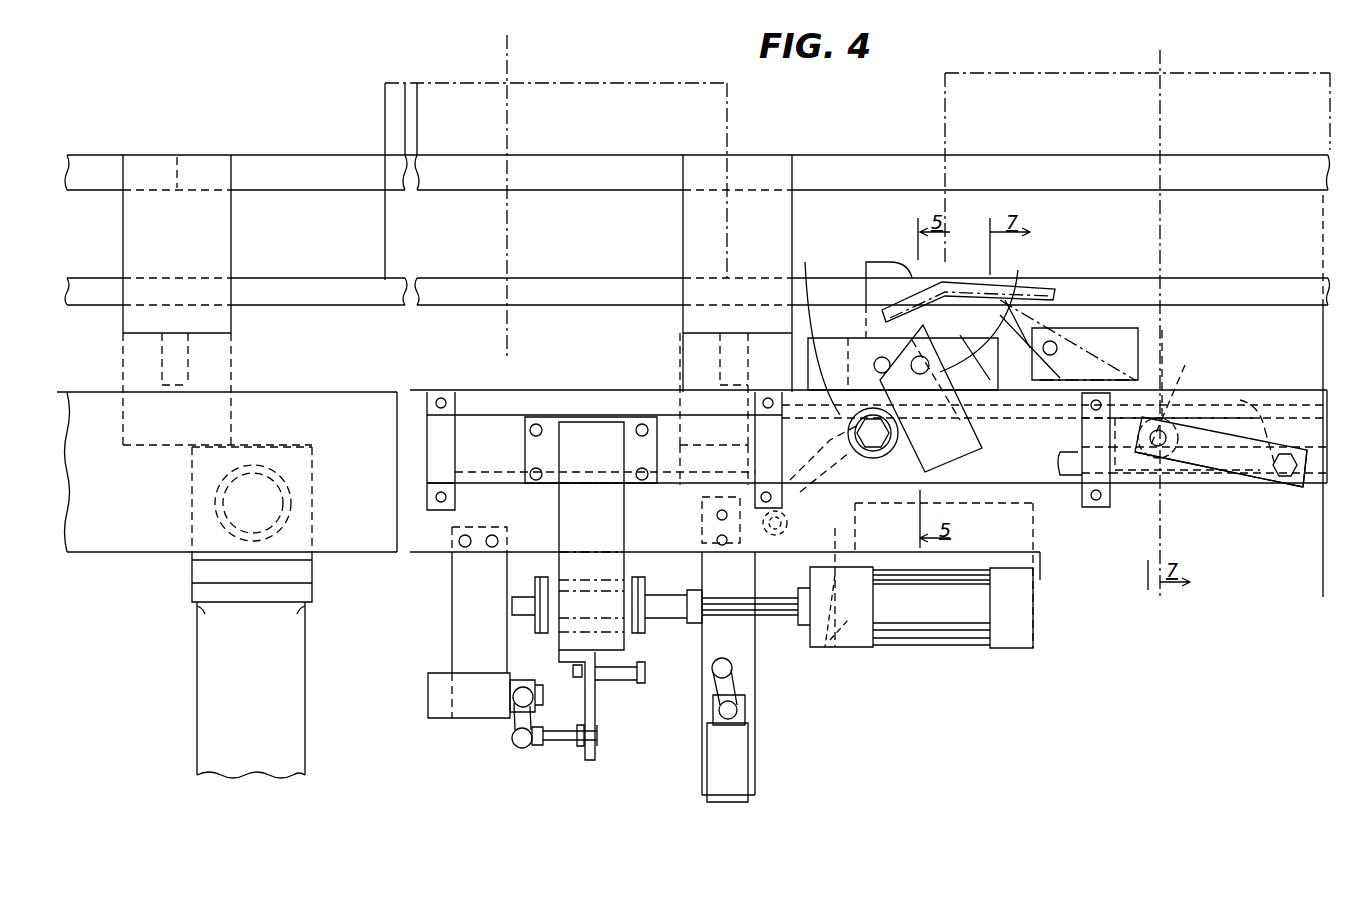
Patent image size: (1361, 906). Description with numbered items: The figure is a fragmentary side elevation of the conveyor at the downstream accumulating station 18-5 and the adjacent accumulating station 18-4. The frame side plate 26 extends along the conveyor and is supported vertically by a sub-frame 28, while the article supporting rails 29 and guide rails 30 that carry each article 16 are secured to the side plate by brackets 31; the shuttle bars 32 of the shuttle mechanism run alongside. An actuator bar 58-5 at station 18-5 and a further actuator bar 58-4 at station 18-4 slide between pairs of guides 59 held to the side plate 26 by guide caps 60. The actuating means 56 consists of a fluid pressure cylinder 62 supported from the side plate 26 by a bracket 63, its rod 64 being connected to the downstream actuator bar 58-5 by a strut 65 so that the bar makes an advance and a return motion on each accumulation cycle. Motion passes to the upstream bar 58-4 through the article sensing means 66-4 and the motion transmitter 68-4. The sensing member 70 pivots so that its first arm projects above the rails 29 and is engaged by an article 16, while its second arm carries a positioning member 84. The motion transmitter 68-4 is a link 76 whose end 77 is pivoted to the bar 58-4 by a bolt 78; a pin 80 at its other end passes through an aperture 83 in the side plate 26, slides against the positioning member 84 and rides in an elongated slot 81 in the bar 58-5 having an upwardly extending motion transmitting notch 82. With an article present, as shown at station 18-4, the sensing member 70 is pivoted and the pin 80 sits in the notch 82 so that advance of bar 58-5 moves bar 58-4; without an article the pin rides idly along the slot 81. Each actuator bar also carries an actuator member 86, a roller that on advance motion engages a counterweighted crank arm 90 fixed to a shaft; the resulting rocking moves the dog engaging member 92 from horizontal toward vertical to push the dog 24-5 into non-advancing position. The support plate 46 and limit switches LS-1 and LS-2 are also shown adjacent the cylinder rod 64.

The article 16 is at (730, 100).
The downstream accumulating station 18-5 is at (519, 193).
The accumulating station 18-4 is at (1164, 315).
The guide rail 30 is at (320, 152).
The supporting rail 29 is at (273, 277).
The bracket 31 is at (233, 228).
The side plate 26 is at (84, 557).
The sub-frame 28 is at (188, 712).
The downstream actuator bar 58-5 is at (510, 415).
The upstream actuator bar 58-4 is at (1298, 413).
The guide 59 is at (485, 392).
The guide cap 60 is at (428, 412).
The dog 24-5 is at (883, 262).
The dog engaging member 92 is at (870, 395).
The actuator member 86 is at (824, 368).
The pin 80 is at (1152, 448).
The article sensing means 66-4 is at (1045, 300).
The crank arm 90 is at (991, 311).
The sensing member 70 is at (1080, 325).
The elongated slot 81 is at (1072, 500).
The link 76 is at (1197, 490).
The bolt 78 is at (1280, 480).
The link end 77 is at (1302, 488).
The positioning member 84 is at (1170, 345).
The motion transmitting notch 82 is at (1188, 367).
The motion transmitter 68-4 is at (1222, 430).
The shuttle bar 32 is at (1260, 392).
The aperture 83 is at (1270, 398).
The strut 65 is at (625, 562).
The rod 64 is at (650, 618).
The switch support plate 46 is at (760, 610).
The limit switch LS-2 is at (752, 803).
The limit switch LS-1 is at (430, 718).
The bracket 63 is at (812, 652).
The fluid pressure cylinder 62 is at (893, 647).
The actuating means 56 is at (960, 648).